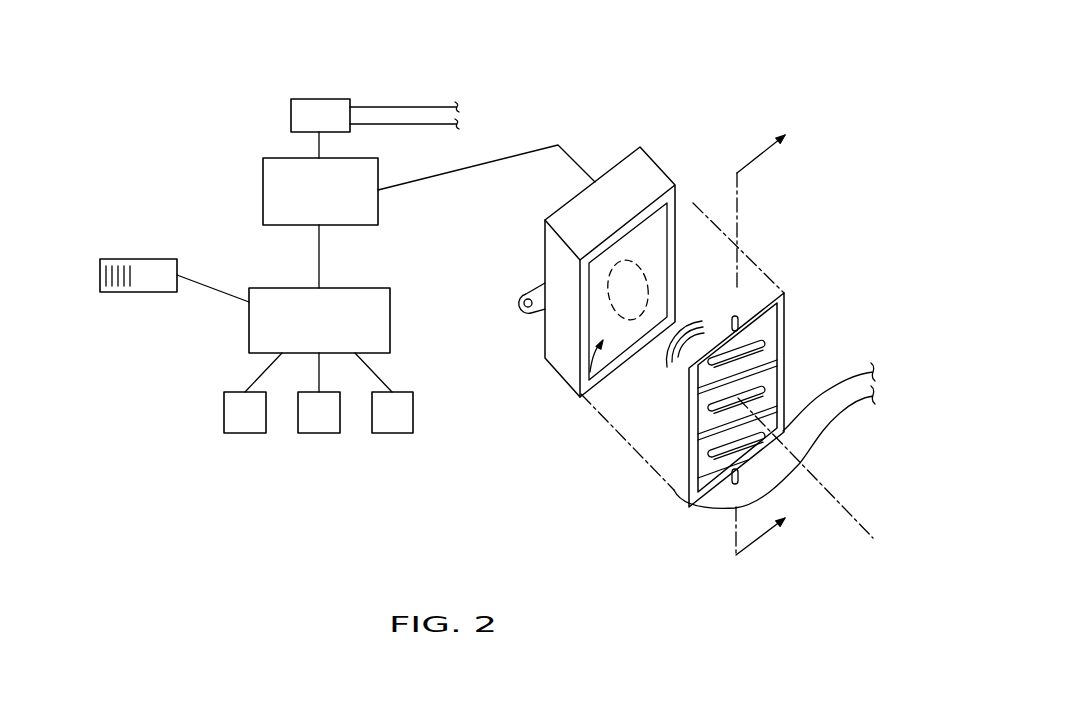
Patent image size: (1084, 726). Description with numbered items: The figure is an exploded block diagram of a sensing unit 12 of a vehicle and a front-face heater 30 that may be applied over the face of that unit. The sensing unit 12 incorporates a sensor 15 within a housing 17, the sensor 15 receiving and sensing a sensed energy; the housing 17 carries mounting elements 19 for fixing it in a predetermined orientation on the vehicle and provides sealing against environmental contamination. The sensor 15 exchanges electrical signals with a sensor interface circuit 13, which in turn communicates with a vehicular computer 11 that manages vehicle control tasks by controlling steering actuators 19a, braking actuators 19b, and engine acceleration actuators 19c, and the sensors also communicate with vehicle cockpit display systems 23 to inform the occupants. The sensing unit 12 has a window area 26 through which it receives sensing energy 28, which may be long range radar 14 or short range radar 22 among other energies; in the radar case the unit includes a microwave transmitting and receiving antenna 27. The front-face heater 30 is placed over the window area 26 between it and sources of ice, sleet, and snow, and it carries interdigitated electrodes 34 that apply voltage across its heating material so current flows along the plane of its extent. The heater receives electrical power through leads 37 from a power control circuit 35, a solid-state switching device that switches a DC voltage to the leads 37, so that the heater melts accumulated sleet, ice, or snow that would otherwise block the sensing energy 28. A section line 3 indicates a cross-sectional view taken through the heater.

The section line 3- 3 is at (804, 345).
The vehicular computer 11 is at (270, 316).
The sensing unit 12 is at (632, 178).
The sensor interface circuit 13 is at (262, 190).
The long range radar 14 is at (757, 103).
The sensor 15 is at (625, 292).
The housing 17 is at (558, 335).
The mounting elements 19 is at (522, 312).
The steering actuators 19a is at (243, 433).
The braking actuators 19b is at (318, 433).
The engine acceleration actuators 19c is at (392, 433).
The short range radar 22 is at (727, 281).
The vehicle cockpit display systems 23 is at (132, 259).
The window area 26 is at (650, 232).
The microwave transmitting and microwave receiving antenna 27 is at (575, 386).
The sensing energy 28 is at (683, 328).
The front-face heater 30 is at (686, 553).
The interdigitated electrodes 34 is at (689, 412).
The power control circuit 35 is at (320, 99).
The leads 37 is at (388, 124).